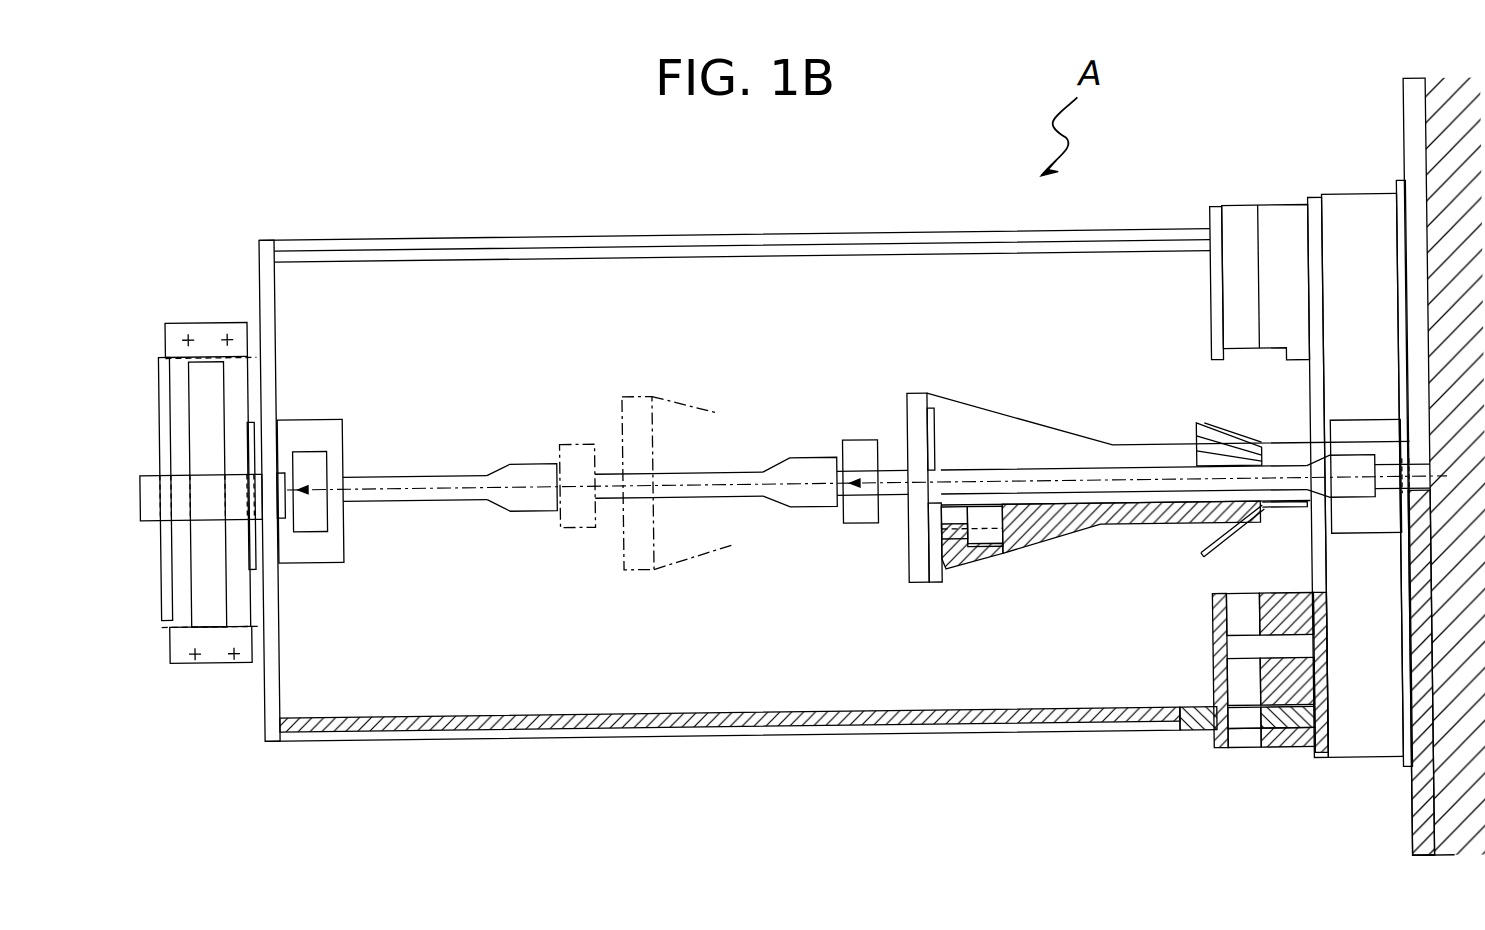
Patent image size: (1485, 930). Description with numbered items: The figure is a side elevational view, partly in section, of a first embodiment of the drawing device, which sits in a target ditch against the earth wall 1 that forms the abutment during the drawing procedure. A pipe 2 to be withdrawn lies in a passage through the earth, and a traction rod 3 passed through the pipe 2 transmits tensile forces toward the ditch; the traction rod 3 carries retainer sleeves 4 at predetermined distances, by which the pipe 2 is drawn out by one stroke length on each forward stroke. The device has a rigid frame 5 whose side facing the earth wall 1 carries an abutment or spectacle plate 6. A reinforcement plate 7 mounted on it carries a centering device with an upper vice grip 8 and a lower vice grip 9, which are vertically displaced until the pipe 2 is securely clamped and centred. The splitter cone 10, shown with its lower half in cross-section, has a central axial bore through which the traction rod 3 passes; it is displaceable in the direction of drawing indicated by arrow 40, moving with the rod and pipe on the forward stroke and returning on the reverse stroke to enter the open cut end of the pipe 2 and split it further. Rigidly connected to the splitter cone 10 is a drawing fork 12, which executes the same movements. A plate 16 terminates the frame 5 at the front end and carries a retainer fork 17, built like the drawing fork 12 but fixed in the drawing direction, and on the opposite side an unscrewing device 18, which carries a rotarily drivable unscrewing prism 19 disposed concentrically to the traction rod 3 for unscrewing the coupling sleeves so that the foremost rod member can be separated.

The earth wall 1 is at (1440, 133).
The pipe 2 is at (1282, 452).
The traction rod 3 is at (738, 474).
The retainer sleeves 4 is at (522, 465).
The rigid frame 5 is at (906, 248).
The abutment or spectacle plate 6 is at (1420, 813).
The reinforcement plate 7 is at (1354, 232).
The upper vice grip 8 is at (1279, 232).
The lower vice grip 9 is at (1282, 742).
The splitter cone 10 is at (696, 423).
The drawing fork 12 is at (583, 452).
The plate 16 is at (266, 276).
The retainer fork 17 is at (316, 463).
The unscrewing device 18 is at (216, 680).
The unscrewing prism 19 is at (150, 504).
The arrow 40 is at (865, 497).